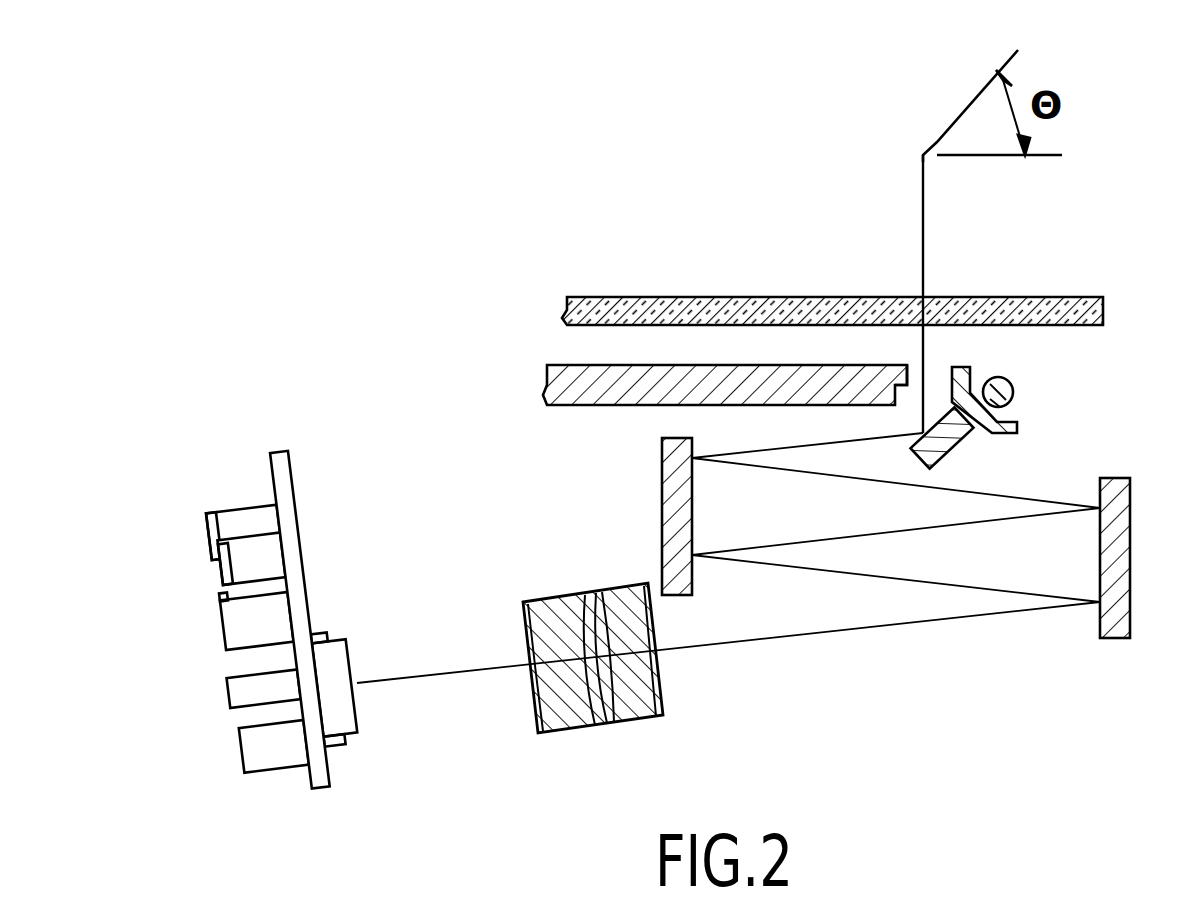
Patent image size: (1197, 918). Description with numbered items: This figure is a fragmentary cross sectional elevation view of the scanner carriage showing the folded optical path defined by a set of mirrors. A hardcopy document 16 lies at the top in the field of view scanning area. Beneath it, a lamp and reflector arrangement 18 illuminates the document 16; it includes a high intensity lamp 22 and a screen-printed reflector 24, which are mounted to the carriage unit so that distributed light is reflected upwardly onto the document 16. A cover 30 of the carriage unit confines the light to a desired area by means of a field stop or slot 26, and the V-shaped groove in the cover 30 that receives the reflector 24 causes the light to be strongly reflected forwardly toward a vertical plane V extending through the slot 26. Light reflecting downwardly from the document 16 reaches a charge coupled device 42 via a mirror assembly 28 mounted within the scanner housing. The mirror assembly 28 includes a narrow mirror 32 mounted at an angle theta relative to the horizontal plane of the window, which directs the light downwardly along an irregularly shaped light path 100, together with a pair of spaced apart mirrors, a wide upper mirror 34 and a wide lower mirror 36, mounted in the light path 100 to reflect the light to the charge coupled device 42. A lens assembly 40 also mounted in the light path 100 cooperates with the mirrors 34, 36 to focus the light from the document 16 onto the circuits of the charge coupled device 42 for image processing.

The document 16 is at (673, 297).
The lamp and reflector arrangement 18 is at (1100, 347).
The high intensity lamp 22 is at (1013, 390).
The screen-printed reflector 24 is at (1020, 428).
The field stop or slot 26 is at (907, 363).
The mirror assembly 28 is at (1003, 668).
The cover 30 is at (550, 385).
The narrow mirror 32 is at (953, 447).
The wide upper mirror 34 is at (662, 497).
The wide lower mirror 36 is at (1118, 638).
The lens assembly 40 is at (663, 690).
The charge coupled device 42 is at (281, 453).
The light path 100 is at (680, 782).
The vertical plane V is at (923, 227).